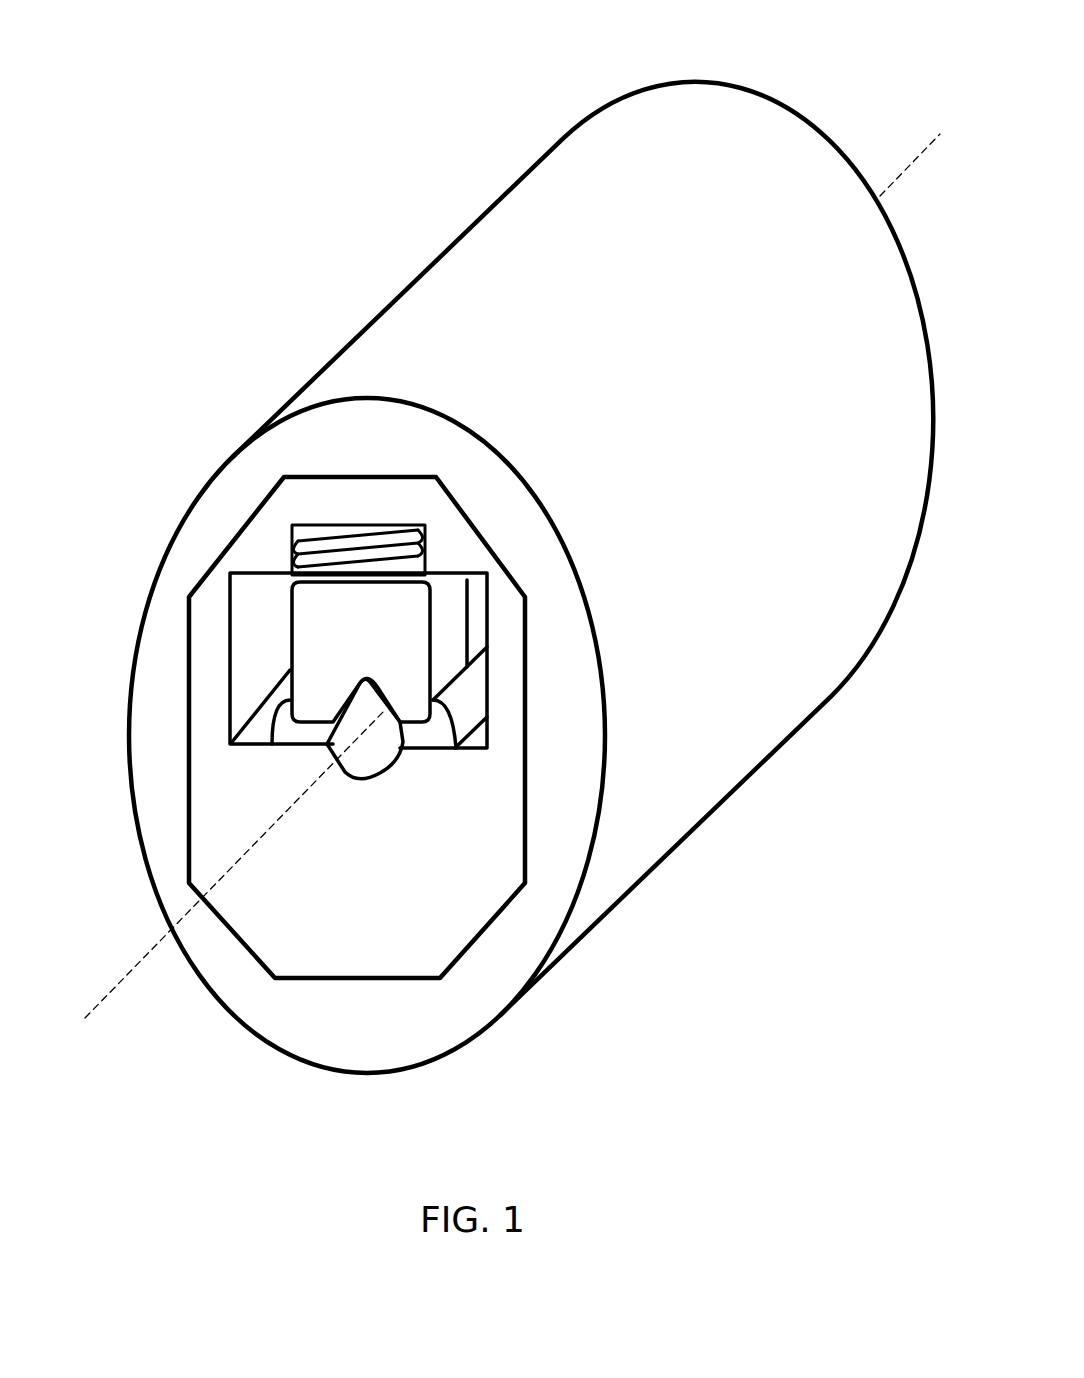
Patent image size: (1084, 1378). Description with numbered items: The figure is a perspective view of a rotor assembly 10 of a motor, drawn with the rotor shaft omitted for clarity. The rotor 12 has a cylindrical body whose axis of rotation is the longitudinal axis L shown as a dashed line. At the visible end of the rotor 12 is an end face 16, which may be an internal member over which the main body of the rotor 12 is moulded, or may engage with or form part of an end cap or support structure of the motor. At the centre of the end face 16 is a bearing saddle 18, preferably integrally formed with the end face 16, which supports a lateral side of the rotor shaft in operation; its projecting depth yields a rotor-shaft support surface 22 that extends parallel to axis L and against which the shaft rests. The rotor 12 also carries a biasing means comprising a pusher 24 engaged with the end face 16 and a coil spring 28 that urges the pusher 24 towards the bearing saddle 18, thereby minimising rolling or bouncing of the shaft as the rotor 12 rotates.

The rotor assembly 10 is at (275, 237).
The rotor 12 is at (805, 72).
The end face 16 is at (479, 931).
The bearing saddle 18 is at (328, 750).
The rotor-shaft support surface 22 is at (328, 733).
The pusher 24 is at (286, 620).
The coil spring 28 is at (370, 527).